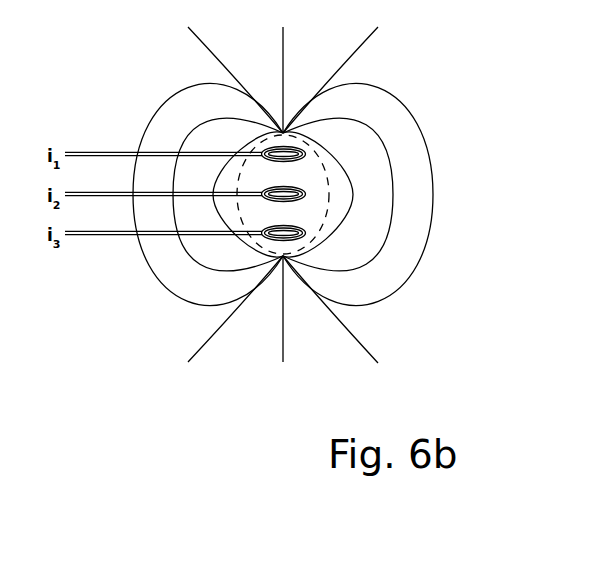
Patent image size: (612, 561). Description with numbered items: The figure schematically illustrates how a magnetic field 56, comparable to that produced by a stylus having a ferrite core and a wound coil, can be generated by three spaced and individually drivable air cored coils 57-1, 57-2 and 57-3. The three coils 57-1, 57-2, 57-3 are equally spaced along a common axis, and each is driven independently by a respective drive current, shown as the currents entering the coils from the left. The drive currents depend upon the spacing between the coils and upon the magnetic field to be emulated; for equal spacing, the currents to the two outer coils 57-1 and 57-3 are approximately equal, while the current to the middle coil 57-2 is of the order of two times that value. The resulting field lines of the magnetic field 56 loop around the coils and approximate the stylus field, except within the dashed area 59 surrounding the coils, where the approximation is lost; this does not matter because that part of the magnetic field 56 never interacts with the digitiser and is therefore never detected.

The magnetic field 56 is at (438, 312).
The air cored coil 57-1 is at (305, 152).
The air cored coil 57-2 is at (305, 192).
The air cored coil 57-3 is at (305, 231).
The dashed area 59 is at (243, 253).